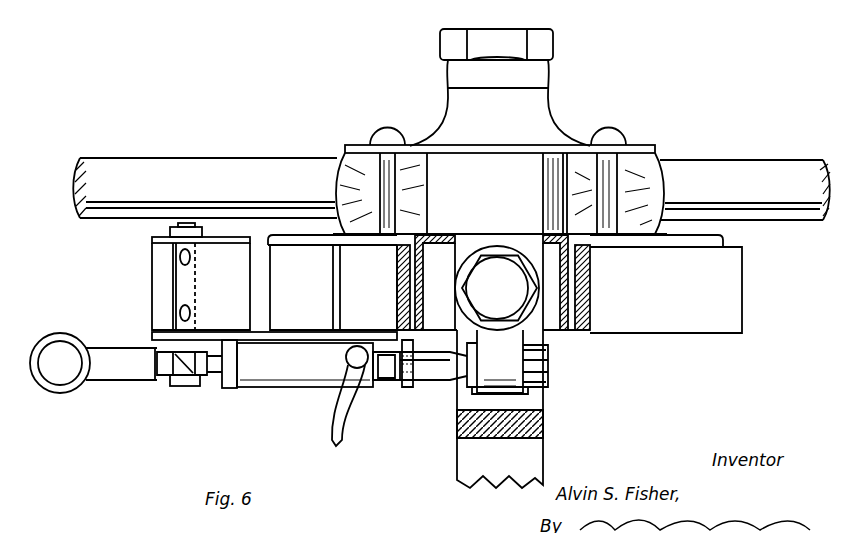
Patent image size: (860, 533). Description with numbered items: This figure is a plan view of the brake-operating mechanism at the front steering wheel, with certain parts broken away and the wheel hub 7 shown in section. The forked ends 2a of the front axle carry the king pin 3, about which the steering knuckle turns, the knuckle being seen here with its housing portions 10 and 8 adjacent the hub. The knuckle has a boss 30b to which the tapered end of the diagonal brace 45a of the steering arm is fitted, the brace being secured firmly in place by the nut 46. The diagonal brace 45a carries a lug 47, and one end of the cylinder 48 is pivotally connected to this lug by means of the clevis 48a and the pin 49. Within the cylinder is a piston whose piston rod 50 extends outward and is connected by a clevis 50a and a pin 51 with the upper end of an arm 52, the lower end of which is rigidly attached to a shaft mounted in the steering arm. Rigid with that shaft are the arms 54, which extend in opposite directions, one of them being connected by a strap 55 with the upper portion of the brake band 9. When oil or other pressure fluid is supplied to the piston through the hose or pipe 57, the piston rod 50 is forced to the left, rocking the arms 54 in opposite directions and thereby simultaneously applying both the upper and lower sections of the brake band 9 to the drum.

The hub 7 is at (584, 165).
The left housing section 10 is at (397, 286).
The brake band 9 is at (666, 290).
The bushing 8 is at (423, 290).
The king pin 3 is at (497, 288).
The forked ends of the front or steering wheel axle 2a is at (545, 420).
The boss 30b is at (538, 364).
The nut 46 is at (549, 385).
The lug 47 is at (432, 383).
The pin 49 is at (405, 390).
The clevis 48a is at (376, 384).
The cylinder 48 is at (305, 365).
The hose or pipe 57 is at (338, 413).
The piston rod 50 is at (229, 386).
The pin 51 is at (172, 381).
The arm 52 is at (184, 389).
The clevis 50a is at (150, 354).
The diagonal brace 45a is at (74, 390).
The strap 55 is at (152, 300).
The arm 54 is at (152, 240).